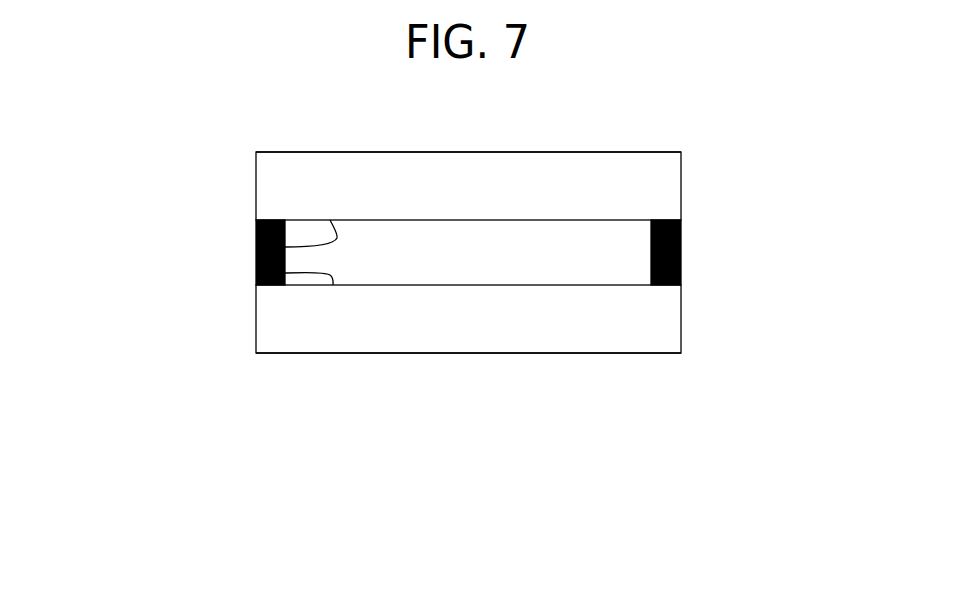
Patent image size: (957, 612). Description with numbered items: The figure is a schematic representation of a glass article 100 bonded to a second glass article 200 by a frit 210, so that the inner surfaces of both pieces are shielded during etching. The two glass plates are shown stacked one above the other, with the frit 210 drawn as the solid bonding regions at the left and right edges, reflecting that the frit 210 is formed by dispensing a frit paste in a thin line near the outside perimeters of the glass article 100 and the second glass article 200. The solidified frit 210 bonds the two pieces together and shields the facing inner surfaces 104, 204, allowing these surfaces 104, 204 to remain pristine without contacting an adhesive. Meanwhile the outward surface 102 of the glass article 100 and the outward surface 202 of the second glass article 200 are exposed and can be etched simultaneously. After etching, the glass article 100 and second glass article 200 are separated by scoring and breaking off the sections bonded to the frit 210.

The glass article 100 is at (582, 190).
The surface 102 is at (657, 151).
The second surface 104 is at (255, 248).
The second glass article 200 is at (481, 353).
The surface 202 is at (568, 317).
The surface 204 is at (255, 275).
The frit 210 is at (682, 264).